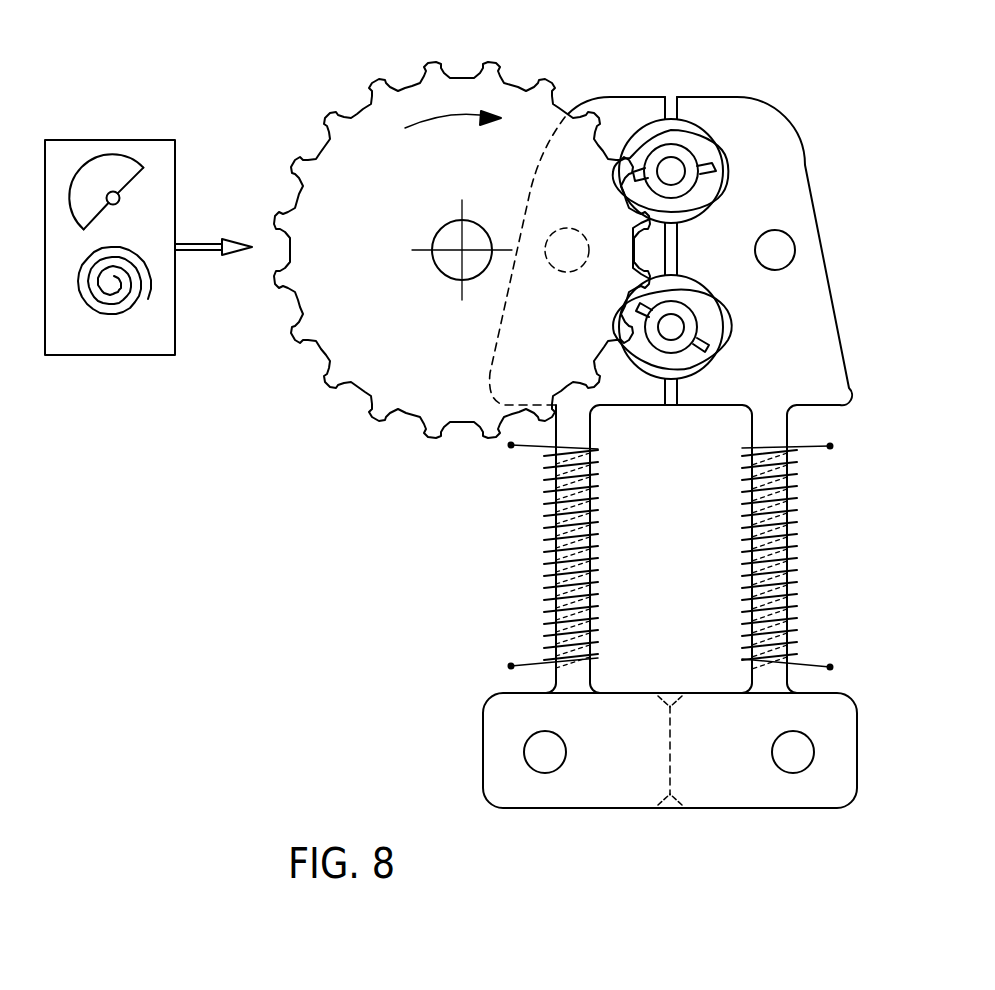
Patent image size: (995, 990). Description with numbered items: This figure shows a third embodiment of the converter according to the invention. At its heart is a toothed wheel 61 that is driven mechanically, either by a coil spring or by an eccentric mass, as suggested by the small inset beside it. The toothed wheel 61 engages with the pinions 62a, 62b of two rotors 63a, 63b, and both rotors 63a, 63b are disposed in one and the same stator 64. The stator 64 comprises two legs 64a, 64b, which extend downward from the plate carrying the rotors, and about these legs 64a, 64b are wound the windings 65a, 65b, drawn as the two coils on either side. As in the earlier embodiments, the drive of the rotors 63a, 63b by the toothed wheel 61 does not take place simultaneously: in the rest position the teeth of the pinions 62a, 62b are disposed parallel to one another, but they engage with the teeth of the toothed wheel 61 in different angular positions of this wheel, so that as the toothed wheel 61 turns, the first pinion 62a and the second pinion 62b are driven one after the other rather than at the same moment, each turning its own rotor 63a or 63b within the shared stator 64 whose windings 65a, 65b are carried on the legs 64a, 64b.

The toothed wheel 61 is at (372, 128).
The pinion 62a is at (715, 166).
The pinion 62b is at (707, 353).
The rotor 63a is at (667, 153).
The rotor 63b is at (688, 315).
The stator 64 is at (778, 193).
The leg 64a is at (767, 675).
The leg 64b is at (576, 672).
The winding 65a is at (817, 452).
The winding 65b is at (521, 449).